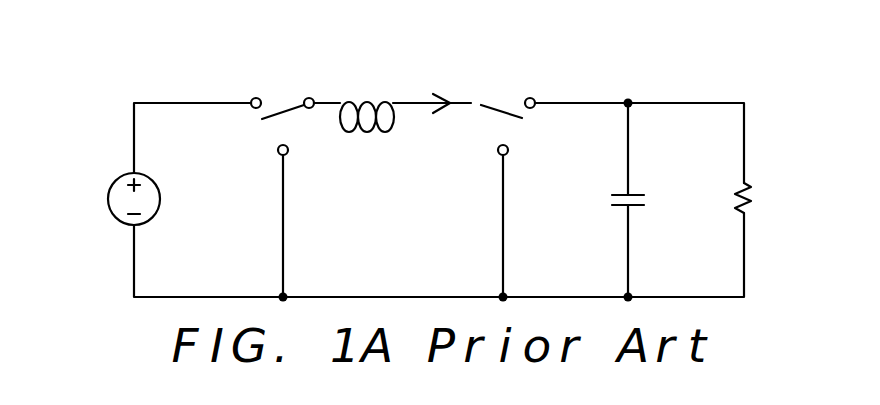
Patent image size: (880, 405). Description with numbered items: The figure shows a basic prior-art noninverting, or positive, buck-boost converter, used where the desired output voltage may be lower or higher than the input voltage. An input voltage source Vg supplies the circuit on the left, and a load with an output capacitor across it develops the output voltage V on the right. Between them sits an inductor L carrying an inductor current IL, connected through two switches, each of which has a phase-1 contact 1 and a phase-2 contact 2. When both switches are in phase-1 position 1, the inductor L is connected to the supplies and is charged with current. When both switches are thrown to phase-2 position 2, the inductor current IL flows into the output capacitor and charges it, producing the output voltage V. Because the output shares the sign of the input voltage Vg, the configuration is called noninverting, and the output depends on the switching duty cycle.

The phase-1 switch position 1 is at (379, 185).
The phase-2 switch position 2 is at (409, 186).
The inductor L is at (367, 102).
The inductor current IL is at (437, 89).
The input voltage Vg is at (120, 199).
The output voltage V is at (756, 199).